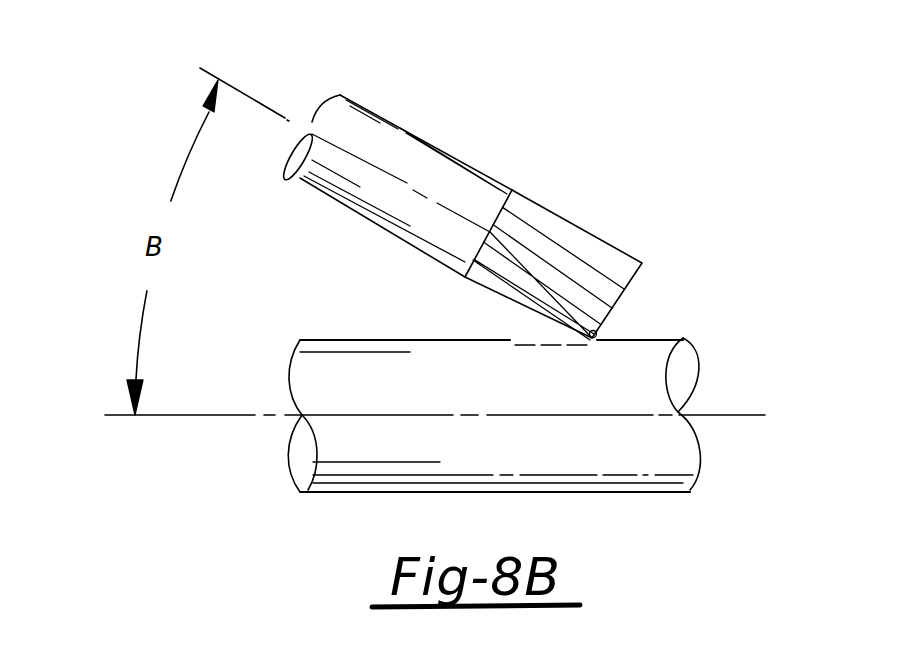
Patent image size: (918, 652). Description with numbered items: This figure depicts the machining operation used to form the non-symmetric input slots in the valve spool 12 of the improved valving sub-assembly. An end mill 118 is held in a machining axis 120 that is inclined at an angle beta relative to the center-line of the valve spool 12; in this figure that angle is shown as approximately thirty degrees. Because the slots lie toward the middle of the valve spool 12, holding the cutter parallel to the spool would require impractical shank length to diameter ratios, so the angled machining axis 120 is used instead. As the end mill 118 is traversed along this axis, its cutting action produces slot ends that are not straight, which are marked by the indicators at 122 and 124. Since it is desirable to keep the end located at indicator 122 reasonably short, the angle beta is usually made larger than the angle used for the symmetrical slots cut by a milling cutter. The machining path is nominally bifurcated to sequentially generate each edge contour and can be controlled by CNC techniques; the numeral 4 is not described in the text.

The angle reference 4 is at (222, 417).
The valve spool 12 is at (618, 460).
The end mill 118 is at (472, 197).
The machining axis 120 is at (280, 113).
The indicator 122 is at (512, 338).
The indicator 124 is at (645, 320).